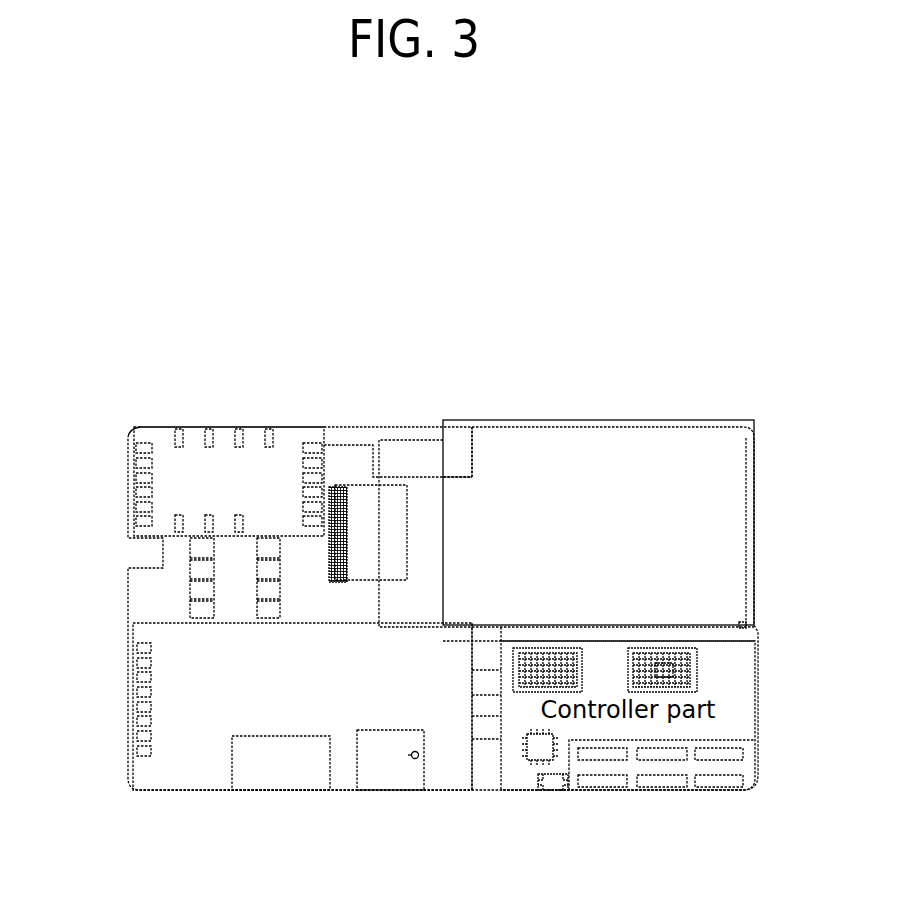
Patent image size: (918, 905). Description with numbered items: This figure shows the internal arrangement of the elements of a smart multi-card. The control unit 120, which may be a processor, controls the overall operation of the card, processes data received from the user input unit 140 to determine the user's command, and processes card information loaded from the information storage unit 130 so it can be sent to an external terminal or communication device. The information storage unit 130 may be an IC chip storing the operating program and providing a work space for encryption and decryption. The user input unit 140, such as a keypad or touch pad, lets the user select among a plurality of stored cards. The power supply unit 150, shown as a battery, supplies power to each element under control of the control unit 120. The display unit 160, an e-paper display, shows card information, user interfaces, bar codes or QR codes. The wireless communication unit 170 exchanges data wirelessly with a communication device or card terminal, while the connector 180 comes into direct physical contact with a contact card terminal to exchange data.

The control unit 120 is at (555, 780).
The information storage unit 130 is at (253, 440).
The user input unit 140 is at (632, 780).
The power supply unit 150 is at (183, 782).
The display unit 160 is at (583, 437).
The wireless communication unit 170 is at (393, 780).
The connector 180 is at (197, 600).